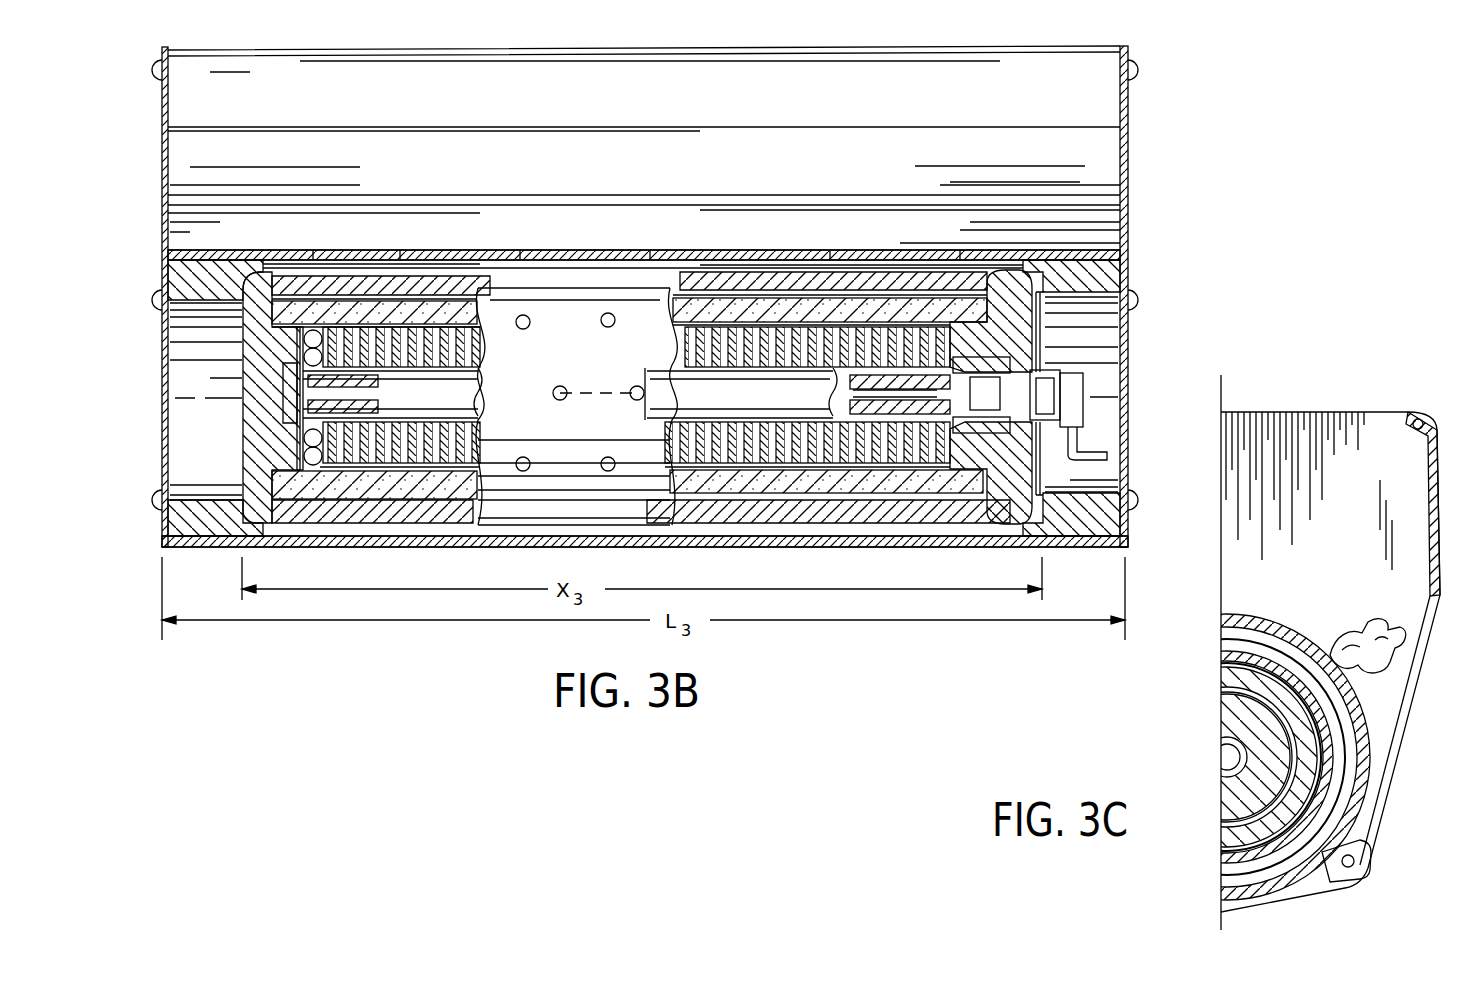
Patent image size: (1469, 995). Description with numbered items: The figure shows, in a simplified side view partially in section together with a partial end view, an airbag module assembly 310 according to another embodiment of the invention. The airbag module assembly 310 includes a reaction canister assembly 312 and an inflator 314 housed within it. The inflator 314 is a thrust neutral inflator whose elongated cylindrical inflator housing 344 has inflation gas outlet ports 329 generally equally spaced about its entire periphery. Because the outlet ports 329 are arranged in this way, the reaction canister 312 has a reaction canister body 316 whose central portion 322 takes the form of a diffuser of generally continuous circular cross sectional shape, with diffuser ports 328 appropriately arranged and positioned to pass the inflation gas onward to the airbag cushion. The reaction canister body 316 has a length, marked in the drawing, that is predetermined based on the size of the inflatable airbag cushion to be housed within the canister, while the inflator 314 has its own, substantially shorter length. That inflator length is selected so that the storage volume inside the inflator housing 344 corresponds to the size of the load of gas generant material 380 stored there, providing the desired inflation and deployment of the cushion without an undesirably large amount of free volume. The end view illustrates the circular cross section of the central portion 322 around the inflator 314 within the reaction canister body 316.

In FIG. 3B, the airbag module assembly 310 is at (1133, 174).
In FIG. 3C, the airbag module assembly 310 is at (1302, 394).
In FIG. 3B, the reaction canister assembly 312 is at (308, 95).
In FIG. 3C, the reaction canister assembly 312 is at (1372, 797).
In FIG. 3B, the inflator 314 is at (563, 300).
In FIG. 3C, the inflator 314 is at (1268, 648).
In FIG. 3B, the reaction canister body 316 is at (1107, 252).
In FIG. 3C, the reaction canister body 316 is at (1380, 836).
In FIG. 3B, the central portion 322 is at (860, 254).
In FIG. 3C, the central portion 322 is at (1233, 612).
In FIG. 3B, the diffuser ports 328 is at (803, 254).
In FIG. 3B, the inflation gas outlet ports 329 is at (604, 312).
In FIG. 3B, the inflator housing 344 is at (517, 287).
In FIG. 3B, the gas generant material 380 is at (396, 320).